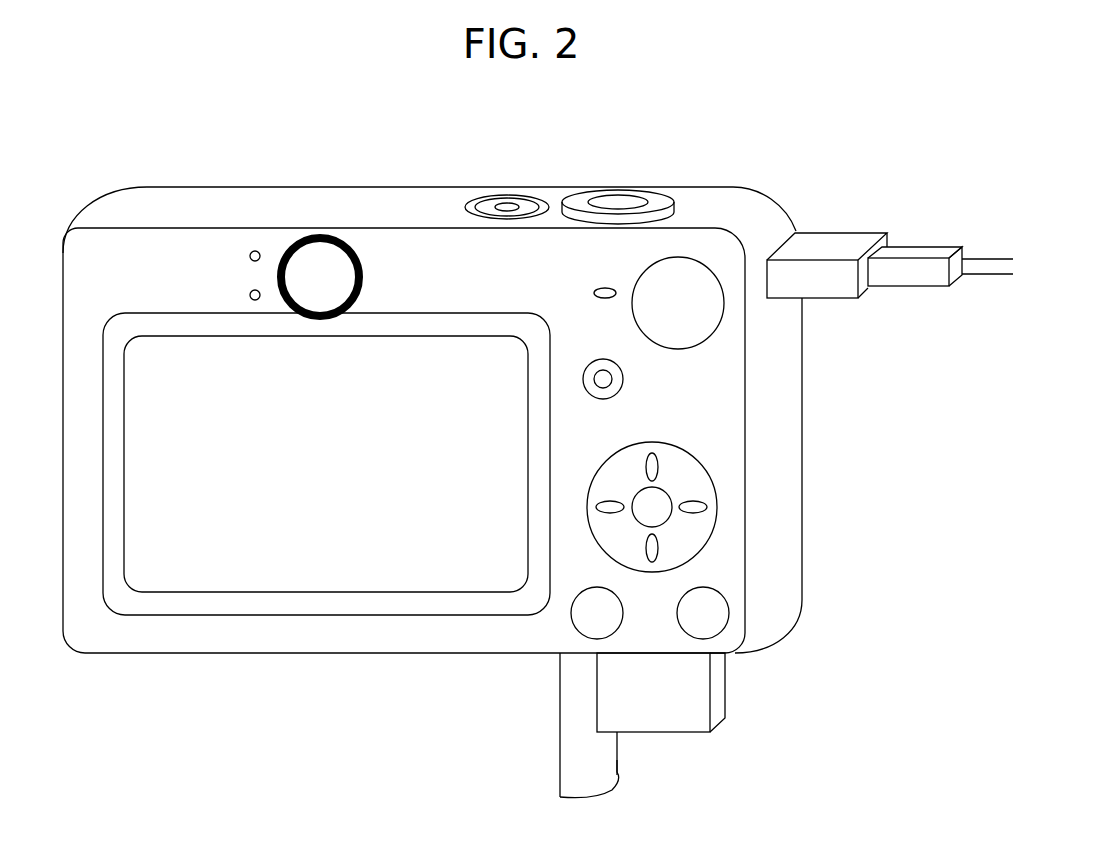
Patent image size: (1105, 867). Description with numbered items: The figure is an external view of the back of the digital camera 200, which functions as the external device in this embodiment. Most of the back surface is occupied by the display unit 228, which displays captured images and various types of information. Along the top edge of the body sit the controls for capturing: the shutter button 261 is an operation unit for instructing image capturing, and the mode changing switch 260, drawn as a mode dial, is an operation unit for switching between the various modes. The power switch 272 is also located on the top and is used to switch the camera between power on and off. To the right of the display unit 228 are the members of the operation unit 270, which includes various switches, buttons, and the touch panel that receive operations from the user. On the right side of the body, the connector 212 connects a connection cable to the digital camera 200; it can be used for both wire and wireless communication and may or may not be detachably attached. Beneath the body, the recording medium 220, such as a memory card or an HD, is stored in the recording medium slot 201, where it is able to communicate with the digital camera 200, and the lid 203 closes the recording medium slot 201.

The digital camera 200 is at (343, 678).
The recording medium slot 201 is at (618, 657).
The lid 203 is at (620, 757).
The connector 212 is at (820, 233).
The recording medium 220 is at (693, 682).
The display unit 228 is at (198, 360).
The mode changing switch 260 is at (692, 277).
The shutter button 261 is at (613, 195).
The operation unit 270 is at (607, 225).
The power switch 272 is at (507, 200).